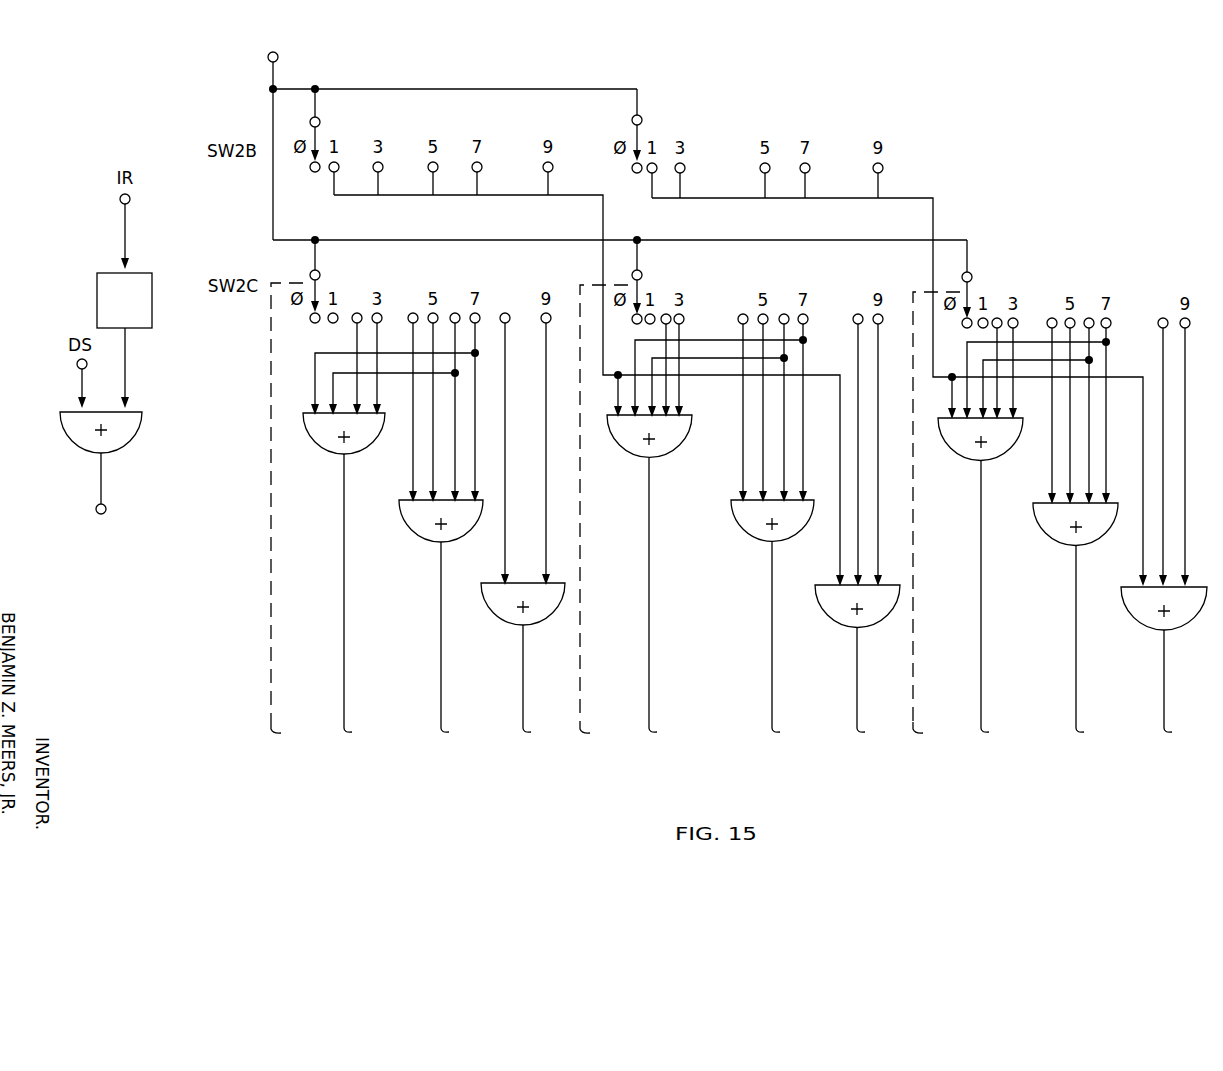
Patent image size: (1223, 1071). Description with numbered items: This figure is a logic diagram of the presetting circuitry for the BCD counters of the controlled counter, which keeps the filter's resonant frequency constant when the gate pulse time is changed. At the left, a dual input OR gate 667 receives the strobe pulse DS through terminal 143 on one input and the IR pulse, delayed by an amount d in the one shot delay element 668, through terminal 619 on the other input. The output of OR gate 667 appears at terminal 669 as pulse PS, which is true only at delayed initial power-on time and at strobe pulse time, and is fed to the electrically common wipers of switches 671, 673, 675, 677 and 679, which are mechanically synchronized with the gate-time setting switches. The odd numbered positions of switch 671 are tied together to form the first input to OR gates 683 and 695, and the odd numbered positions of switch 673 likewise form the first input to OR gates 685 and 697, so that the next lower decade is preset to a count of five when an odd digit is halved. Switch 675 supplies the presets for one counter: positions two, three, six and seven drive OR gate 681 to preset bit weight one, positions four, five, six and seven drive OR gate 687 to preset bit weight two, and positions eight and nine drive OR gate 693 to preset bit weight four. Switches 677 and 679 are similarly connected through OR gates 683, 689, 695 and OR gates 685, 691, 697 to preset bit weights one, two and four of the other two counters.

The terminal 143 is at (77, 368).
The terminal 619 is at (131, 201).
The dual input OR gate 667 is at (66, 421).
The one shot delay element 668 is at (97, 297).
The terminal 669 is at (95, 509).
The switch 671 is at (321, 124).
The switch 673 is at (643, 121).
The switch 675 is at (321, 274).
The switch 677 is at (643, 274).
The switch 679 is at (973, 276).
The OR gate 681 is at (331, 449).
The OR gate 683 is at (641, 452).
The OR gate 685 is at (973, 454).
The OR gate 687 is at (411, 518).
The OR gate 689 is at (749, 520).
The OR gate 691 is at (1050, 522).
The OR gate 693 is at (511, 612).
The OR gate 695 is at (836, 614).
The OR gate 697 is at (1150, 616).